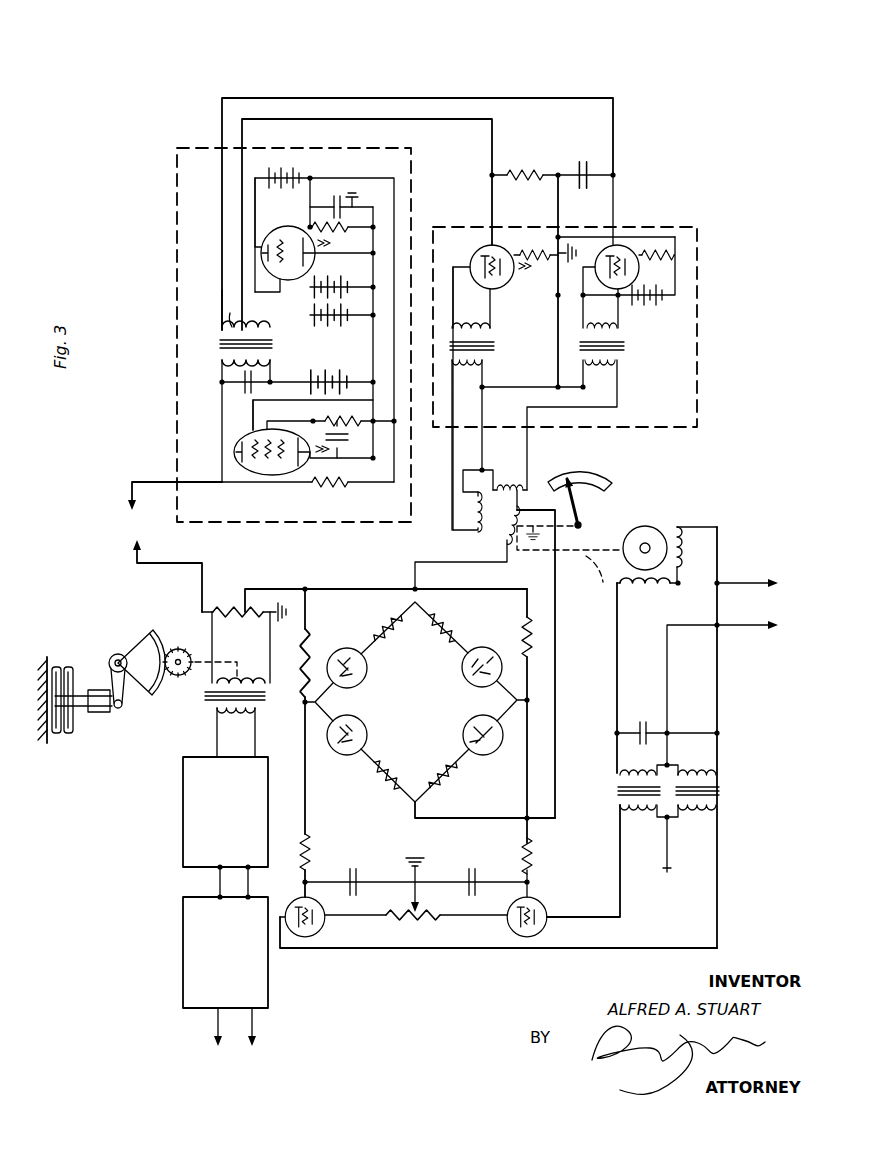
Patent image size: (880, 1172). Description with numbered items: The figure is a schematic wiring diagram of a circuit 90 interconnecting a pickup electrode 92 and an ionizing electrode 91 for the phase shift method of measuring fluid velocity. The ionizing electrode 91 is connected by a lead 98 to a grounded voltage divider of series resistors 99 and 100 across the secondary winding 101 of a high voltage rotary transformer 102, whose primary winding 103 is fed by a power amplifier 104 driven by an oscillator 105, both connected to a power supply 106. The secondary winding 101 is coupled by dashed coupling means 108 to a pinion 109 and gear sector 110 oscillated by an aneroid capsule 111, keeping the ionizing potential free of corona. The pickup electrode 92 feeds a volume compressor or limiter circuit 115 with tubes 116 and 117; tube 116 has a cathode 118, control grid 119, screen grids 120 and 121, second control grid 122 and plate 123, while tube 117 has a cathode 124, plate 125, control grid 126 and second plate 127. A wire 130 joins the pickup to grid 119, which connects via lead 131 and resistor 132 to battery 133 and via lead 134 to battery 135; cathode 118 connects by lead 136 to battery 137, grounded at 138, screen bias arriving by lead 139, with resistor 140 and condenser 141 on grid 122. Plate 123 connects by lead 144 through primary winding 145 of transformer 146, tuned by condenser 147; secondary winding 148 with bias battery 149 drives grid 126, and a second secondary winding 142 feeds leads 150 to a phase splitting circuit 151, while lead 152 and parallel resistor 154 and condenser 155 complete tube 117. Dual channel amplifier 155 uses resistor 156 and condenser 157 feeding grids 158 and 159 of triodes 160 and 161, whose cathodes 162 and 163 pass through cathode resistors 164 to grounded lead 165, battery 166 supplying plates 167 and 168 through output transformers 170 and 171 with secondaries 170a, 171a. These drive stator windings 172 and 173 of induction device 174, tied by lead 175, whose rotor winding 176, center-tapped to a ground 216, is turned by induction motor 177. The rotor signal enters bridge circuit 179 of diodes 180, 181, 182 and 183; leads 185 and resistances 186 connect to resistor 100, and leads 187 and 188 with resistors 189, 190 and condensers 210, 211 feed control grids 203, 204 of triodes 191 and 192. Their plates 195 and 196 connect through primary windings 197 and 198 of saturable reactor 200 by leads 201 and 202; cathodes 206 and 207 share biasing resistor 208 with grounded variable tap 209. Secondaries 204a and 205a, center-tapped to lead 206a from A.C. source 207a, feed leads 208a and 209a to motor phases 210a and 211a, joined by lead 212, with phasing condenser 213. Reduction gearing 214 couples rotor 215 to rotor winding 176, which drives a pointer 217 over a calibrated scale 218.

The circuit 90 is at (150, 84).
The ionizing electrode 91 is at (130, 543).
The pickup electrode 92 is at (128, 480).
The lead 98 is at (200, 585).
The resistor 99 is at (230, 607).
The resistor 100 is at (268, 648).
The secondary winding 101 is at (244, 680).
The high voltage rotary transformer 102 is at (198, 688).
The primary winding 103 is at (243, 723).
The power amplifier 104 is at (212, 798).
The oscillator 105 is at (212, 941).
The power supply 106 is at (235, 1027).
The coupling means 108 is at (212, 660).
The pinion 109 is at (175, 648).
The gear sector 110 is at (119, 654).
The aneroid capsule 111 is at (58, 664).
The volume compressor or limiter circuit 115 is at (166, 305).
The variable mu tube 116 is at (234, 462).
The tube 117 is at (262, 247).
The cathode 118 is at (300, 474).
The control grid 119 is at (282, 475).
The screen grid 120 is at (272, 475).
The screen grid 121 is at (252, 430).
The second control grid 122 is at (265, 474).
The plate 123 is at (240, 446).
The cathode 124 is at (302, 236).
The plate 125 is at (297, 266).
The control grid 126 is at (281, 238).
The second plate 127 is at (270, 262).
The wire 130 is at (257, 474).
The lead 131 is at (373, 205).
The resistor 132 is at (340, 488).
The battery 133 is at (284, 166).
The lead 134 is at (345, 280).
The battery 135 is at (352, 322).
The lead 136 is at (347, 440).
The battery 137 is at (318, 368).
The ground 138 is at (370, 207).
The lead 139 is at (340, 386).
The resistor 140 is at (380, 424).
The condenser 141 is at (362, 488).
The second secondary winding 142 is at (224, 300).
The lead 144 is at (222, 356).
The primary winding 145 is at (220, 336).
The transformer 146 is at (240, 318).
The condenser 147 is at (244, 380).
The secondary winding 148 is at (273, 333).
The battery 149 is at (338, 325).
The leads 150 is at (384, 97).
The phase splitting circuit 151 is at (553, 136).
The lead 152 is at (255, 210).
The resistor 154 is at (326, 222).
The condenser / dual channel amplifier 155 is at (338, 200).
The resistor 156 is at (527, 170).
The condenser 157 is at (583, 163).
The grid 158 is at (489, 248).
The grid 159 is at (612, 248).
The triode 160 is at (480, 250).
The triode 161 is at (624, 245).
The cathode 162 is at (505, 248).
The cathode 163 is at (634, 253).
The cathode resistors 164 is at (538, 260).
The grounded lead 165 is at (556, 205).
The battery 166 is at (624, 344).
The plate 167 is at (462, 322).
The plate 168 is at (603, 256).
The output transformer 170 is at (450, 330).
The secondary winding 170a is at (475, 368).
The output transformer 171 is at (585, 328).
The secondary winding 171a is at (608, 370).
The stator winding 172 is at (474, 512).
The stator winding 173 is at (510, 486).
The two phase rotary induction device 174 is at (501, 496).
The lead 175 is at (510, 385).
The rotor winding 176 is at (506, 532).
The two phase induction motor 177 is at (666, 498).
The phase discriminating bridge circuit 179 is at (423, 686).
The diode 180 is at (367, 735).
The diode 181 is at (345, 648).
The diode 182 is at (483, 647).
The diode 183 is at (485, 755).
The leads 185 is at (282, 588).
The resistances 186 is at (300, 656).
The lead 187 is at (303, 776).
The lead 188 is at (554, 762).
The resistor 189 is at (302, 845).
The resistor 190 is at (522, 857).
The triode 191 is at (300, 938).
The triode 192 is at (540, 900).
The plate 195 is at (302, 881).
The plate 196 is at (592, 917).
The primary winding 197 is at (640, 812).
The primary winding 198 is at (700, 812).
The saturable reactor 200 is at (613, 774).
The lead 201 is at (432, 950).
The lead 202 is at (618, 868).
The control grid 203 is at (312, 936).
The control grid 204 is at (527, 937).
The secondary winding 204a is at (638, 770).
The secondary winding 205a is at (697, 770).
The cathode 206 is at (322, 922).
The lead 206a is at (666, 690).
The cathode 207 is at (508, 916).
The source of A. C. potential 207a is at (756, 585).
The cathode biasing resistor 208 is at (405, 911).
The lead 208a is at (616, 682).
The variable tap 209 is at (418, 872).
The lead 209a is at (716, 690).
The condenser 210 is at (350, 870).
The motor phase 210a is at (648, 589).
The condenser 211 is at (470, 870).
The motor phase 211a is at (684, 552).
The lead 212 is at (719, 580).
The phasing condenser 213 is at (641, 718).
The reduction gearing 214 is at (590, 568).
The rotor 215 is at (645, 526).
The ground 216 is at (531, 536).
The pointer 217 is at (585, 494).
The calibrated scale 218 is at (580, 473).